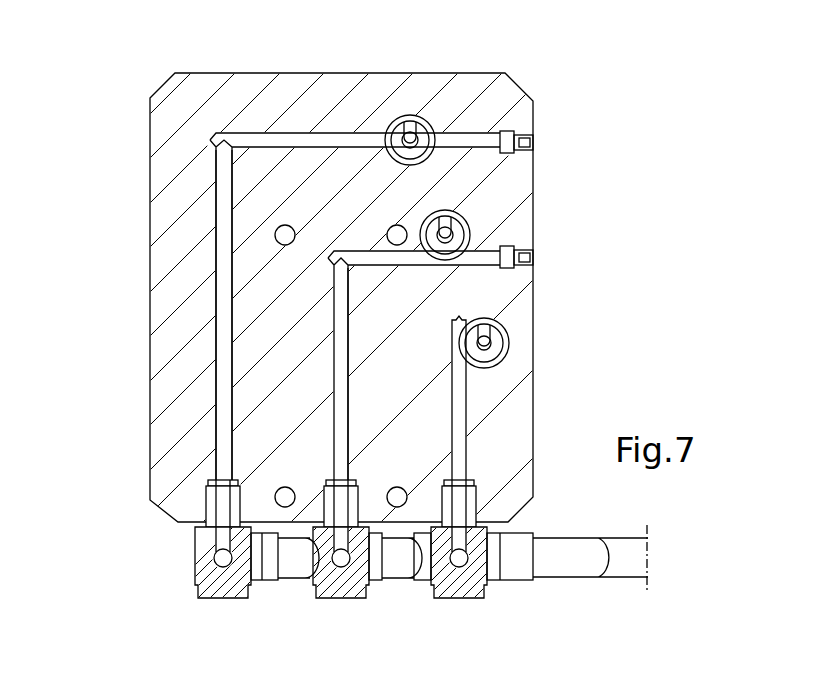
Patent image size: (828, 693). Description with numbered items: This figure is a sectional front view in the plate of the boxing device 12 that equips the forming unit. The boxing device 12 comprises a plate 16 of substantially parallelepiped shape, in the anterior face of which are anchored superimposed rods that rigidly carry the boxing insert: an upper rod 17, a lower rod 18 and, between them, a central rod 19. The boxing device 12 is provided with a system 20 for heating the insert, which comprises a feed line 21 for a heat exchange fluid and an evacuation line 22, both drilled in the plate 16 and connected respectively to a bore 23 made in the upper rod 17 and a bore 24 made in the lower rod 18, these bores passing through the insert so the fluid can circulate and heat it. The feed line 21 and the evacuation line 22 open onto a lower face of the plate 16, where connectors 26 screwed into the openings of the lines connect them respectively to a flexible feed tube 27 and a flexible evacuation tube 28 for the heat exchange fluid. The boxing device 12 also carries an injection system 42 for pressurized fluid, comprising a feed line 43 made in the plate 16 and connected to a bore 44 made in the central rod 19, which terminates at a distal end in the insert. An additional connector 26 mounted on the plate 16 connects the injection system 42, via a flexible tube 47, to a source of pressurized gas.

The boxing device 12 is at (414, 346).
The plate 16 is at (150, 133).
The upper rod 17 is at (432, 101).
The lower rod 18 is at (524, 337).
The central rod 19 is at (459, 218).
The system for heating the insert 20 is at (206, 361).
The feed line 21 is at (218, 437).
The evacuation line 22 is at (457, 452).
The bore 23 is at (410, 138).
The bore 24 is at (485, 320).
The connector 26 is at (218, 600).
The flexible feed tube 27 is at (278, 582).
The flexible evacuation tube 28 is at (615, 582).
The injection system 42 is at (325, 373).
The feed line 43 is at (340, 417).
The bore 44 is at (445, 233).
The flexible tube 47 is at (388, 582).